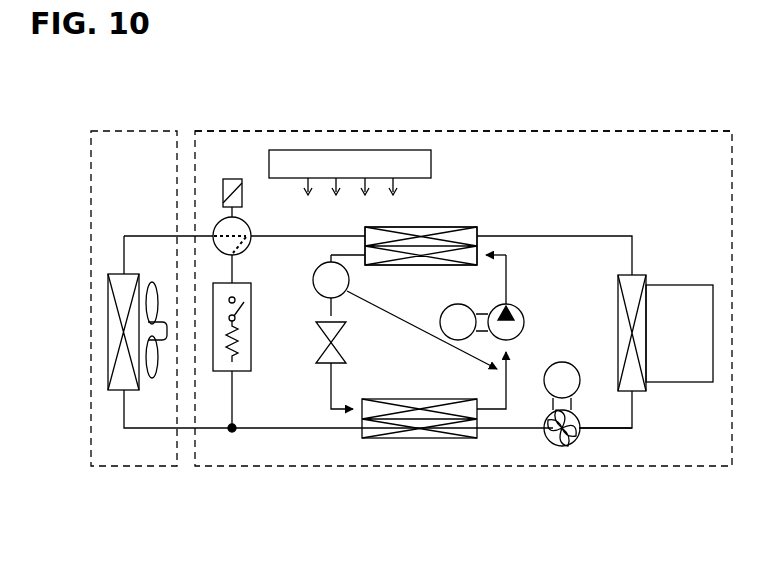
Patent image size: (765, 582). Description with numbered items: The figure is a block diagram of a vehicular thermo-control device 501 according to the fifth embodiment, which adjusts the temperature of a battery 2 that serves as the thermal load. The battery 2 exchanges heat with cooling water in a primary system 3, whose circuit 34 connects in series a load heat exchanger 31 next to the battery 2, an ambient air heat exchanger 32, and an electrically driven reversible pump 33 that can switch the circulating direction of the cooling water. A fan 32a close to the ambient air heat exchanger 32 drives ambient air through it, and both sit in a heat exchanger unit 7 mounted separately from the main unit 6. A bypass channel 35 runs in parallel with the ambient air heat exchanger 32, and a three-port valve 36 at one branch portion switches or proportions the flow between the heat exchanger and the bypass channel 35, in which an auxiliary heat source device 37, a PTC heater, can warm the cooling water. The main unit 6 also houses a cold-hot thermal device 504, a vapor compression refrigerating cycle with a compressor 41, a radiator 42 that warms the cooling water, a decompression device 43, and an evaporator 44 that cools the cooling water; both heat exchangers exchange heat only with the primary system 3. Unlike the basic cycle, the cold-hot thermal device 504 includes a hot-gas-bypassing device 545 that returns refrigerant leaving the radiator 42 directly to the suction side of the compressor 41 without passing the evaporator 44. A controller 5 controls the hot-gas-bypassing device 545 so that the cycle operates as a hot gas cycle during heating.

The battery 2 is at (665, 285).
The primary system 3 is at (495, 220).
The controller 5 is at (316, 150).
The main unit 6 is at (224, 131).
The heat exchanger unit 7 is at (140, 131).
The load heat exchanger 31 is at (640, 391).
The ambient air heat exchanger 32 is at (112, 390).
The fan 32a is at (154, 380).
The pump 33 is at (562, 446).
The circuit 34 is at (607, 428).
The bypass channel 35 is at (232, 432).
The three-port valve 36 is at (250, 247).
The auxiliary heat source device 37 is at (223, 371).
The compressor 41 is at (517, 339).
The radiator 42 is at (378, 265).
The decompression device 43 is at (321, 363).
The evaporator 44 is at (427, 438).
The vehicular thermo-control device 501 is at (415, 116).
The cold-hot thermal device 504 is at (518, 278).
The hot-gas-bypassing device 545 is at (319, 295).